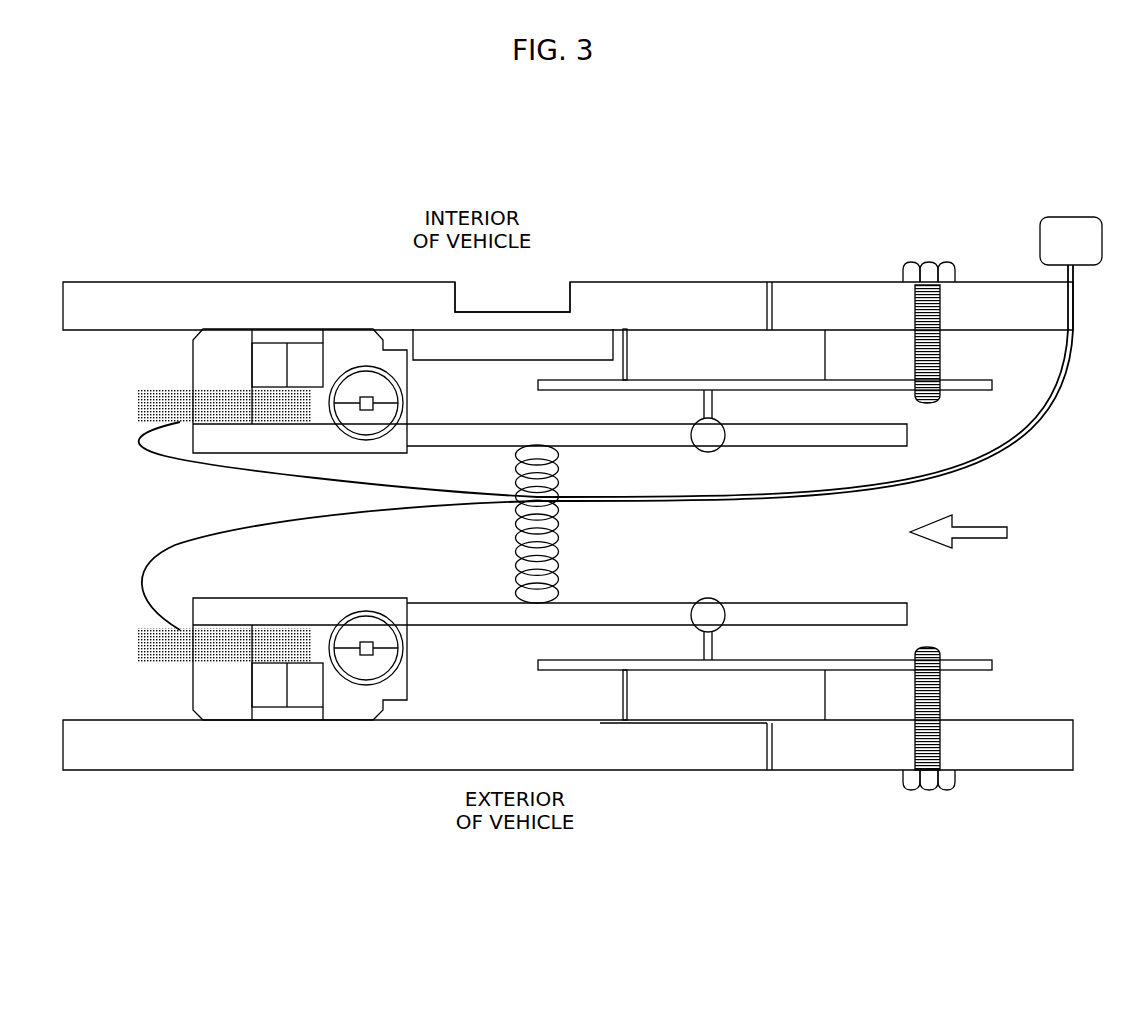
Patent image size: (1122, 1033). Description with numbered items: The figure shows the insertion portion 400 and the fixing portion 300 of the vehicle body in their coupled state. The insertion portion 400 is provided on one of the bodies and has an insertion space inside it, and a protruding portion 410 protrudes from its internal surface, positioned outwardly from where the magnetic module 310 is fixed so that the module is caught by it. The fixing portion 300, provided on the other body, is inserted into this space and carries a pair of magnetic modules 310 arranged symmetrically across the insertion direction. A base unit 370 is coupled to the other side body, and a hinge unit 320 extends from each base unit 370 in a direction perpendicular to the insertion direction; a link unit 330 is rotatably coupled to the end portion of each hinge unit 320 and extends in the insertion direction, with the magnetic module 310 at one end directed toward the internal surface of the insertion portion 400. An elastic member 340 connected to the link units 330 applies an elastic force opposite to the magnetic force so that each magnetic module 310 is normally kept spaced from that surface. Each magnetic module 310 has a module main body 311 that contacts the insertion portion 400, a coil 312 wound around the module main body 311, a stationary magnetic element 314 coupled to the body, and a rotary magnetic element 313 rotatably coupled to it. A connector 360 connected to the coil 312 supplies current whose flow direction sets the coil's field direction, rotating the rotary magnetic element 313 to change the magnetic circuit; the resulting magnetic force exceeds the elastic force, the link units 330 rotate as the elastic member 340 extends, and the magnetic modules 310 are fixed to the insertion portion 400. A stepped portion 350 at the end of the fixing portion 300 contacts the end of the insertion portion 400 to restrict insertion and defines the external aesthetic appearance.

The fixing portion 300 is at (568, 510).
The magnetic module 310 is at (226, 586).
The module main body 311 is at (233, 708).
The coil 312 is at (147, 645).
The rotary magnetic element 313 is at (383, 663).
The stationary magnetic element 314 is at (308, 698).
The hinge unit 320 is at (702, 395).
The link unit 330 is at (565, 437).
The elastic member 340 is at (560, 546).
The stepped portion 350 is at (776, 297).
The connector 360 is at (1068, 228).
The base unit 370 is at (867, 383).
The insertion portion 400 is at (168, 272).
The protruding portion 410 is at (527, 310).